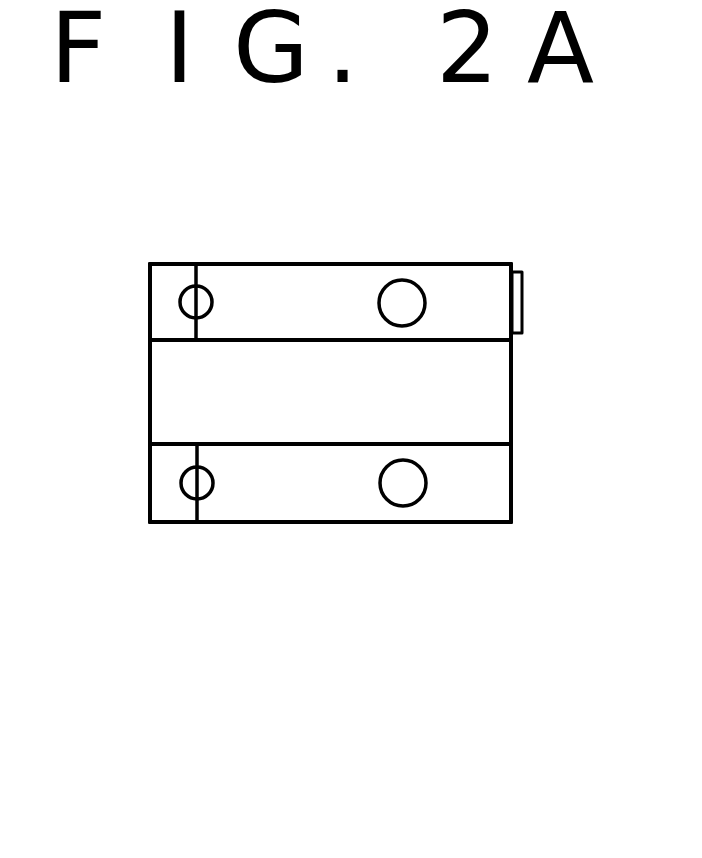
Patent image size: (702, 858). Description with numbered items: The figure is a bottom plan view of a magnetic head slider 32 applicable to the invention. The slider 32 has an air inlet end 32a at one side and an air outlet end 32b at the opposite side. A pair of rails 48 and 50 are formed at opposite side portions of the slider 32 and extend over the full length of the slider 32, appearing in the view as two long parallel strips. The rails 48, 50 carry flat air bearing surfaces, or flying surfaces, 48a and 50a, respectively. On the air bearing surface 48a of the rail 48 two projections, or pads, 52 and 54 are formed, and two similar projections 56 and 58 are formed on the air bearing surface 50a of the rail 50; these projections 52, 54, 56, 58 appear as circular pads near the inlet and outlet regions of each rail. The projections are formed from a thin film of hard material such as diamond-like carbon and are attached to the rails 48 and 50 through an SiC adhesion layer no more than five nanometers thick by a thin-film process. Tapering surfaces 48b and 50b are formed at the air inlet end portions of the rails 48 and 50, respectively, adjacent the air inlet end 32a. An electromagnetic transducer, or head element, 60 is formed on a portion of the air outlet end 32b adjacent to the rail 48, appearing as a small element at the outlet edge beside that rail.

The magnetic head slider 32 is at (474, 258).
The air inlet end 32a is at (158, 398).
The air outlet end 32b is at (512, 398).
The rail 48 is at (334, 263).
The air bearing surface 48a is at (257, 280).
The tapering surface 48b is at (160, 305).
The rail 50 is at (333, 523).
The air bearing surface 50a is at (253, 505).
The tapering surface 50b is at (160, 488).
The projection 52 is at (189, 289).
The projection 54 is at (401, 288).
The projection 56 is at (190, 497).
The projection 58 is at (405, 495).
The electromagnetic transducer 60 is at (523, 305).